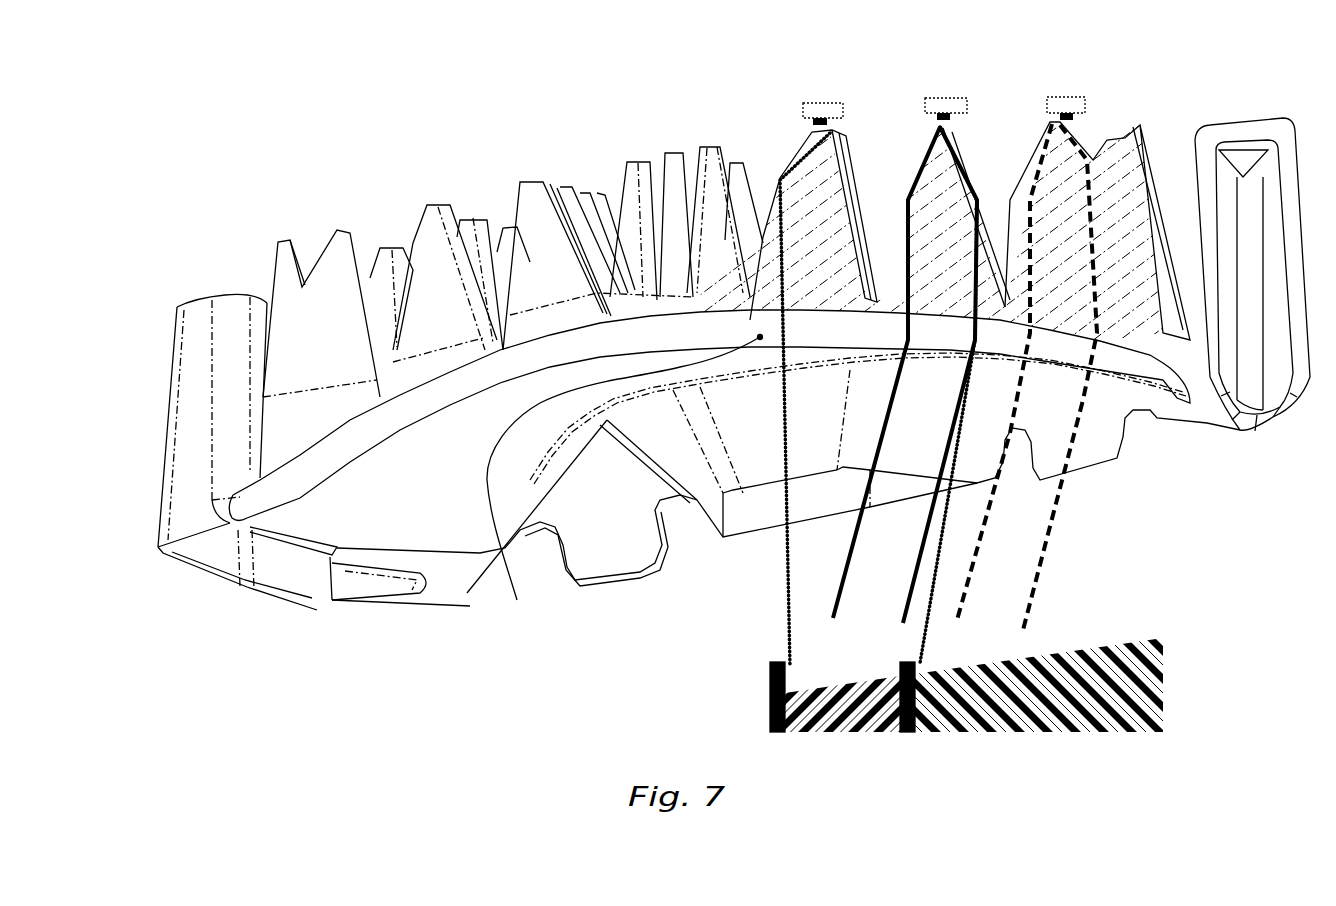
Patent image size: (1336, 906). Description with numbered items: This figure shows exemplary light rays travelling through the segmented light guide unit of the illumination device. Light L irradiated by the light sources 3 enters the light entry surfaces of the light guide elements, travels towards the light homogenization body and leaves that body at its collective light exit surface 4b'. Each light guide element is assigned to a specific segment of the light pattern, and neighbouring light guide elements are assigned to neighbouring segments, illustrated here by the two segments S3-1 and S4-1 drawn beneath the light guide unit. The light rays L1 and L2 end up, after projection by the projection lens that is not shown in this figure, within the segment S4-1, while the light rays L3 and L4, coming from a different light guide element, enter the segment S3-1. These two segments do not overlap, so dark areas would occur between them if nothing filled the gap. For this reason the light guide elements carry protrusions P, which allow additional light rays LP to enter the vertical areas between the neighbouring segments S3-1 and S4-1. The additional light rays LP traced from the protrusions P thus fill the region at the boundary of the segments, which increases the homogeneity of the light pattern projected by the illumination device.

The light source 3 is at (820, 103).
The light L is at (813, 123).
The protrusion P is at (780, 177).
The additional light ray LP is at (788, 572).
The light ray L1 is at (1040, 543).
The light ray L2 is at (980, 547).
The light ray L3 is at (920, 532).
The light ray L4 is at (850, 552).
The collective light exit surface 4b' is at (623, 489).
The segment S3-1 is at (970, 593).
The segment S4-1 is at (1090, 623).